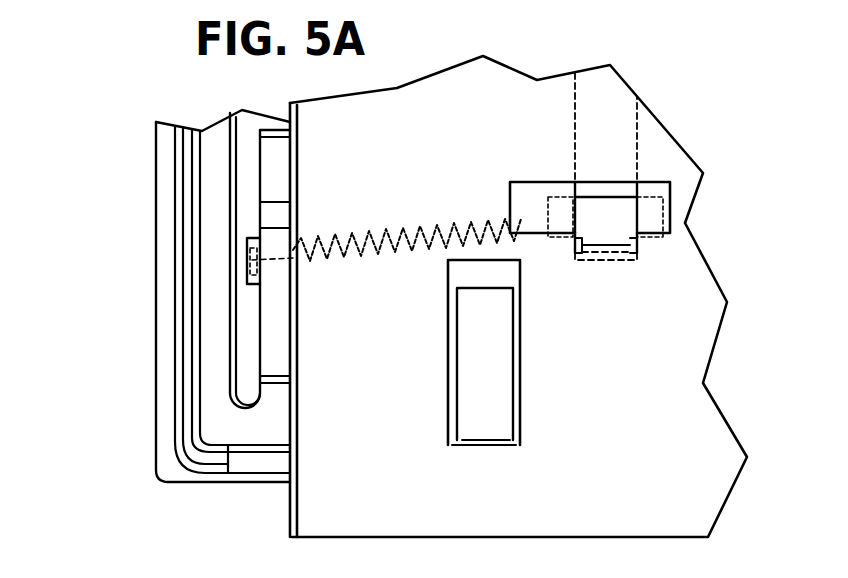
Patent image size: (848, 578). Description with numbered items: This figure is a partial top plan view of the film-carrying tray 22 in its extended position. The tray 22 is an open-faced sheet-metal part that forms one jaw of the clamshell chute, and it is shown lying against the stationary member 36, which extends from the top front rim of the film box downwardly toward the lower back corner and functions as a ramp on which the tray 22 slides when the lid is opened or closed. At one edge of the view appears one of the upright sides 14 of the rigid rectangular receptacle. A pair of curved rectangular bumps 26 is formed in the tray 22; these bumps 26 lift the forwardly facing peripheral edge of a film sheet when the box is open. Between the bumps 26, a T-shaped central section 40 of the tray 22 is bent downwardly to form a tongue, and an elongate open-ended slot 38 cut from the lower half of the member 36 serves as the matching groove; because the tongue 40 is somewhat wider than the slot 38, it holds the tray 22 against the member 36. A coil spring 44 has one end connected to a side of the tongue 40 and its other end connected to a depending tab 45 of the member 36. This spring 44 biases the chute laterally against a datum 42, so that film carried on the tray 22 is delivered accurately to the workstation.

The upright side 14 is at (155, 352).
The film-carrying tray 22 is at (668, 278).
The curved rectangular bump 26 is at (502, 366).
The stationary member 36 is at (280, 340).
The elongate open-ended slot 38 is at (636, 158).
The T-shaped central section 40 is at (568, 183).
The datum 42 is at (293, 172).
The coil spring 44 is at (430, 218).
The depending tab 45 is at (252, 262).